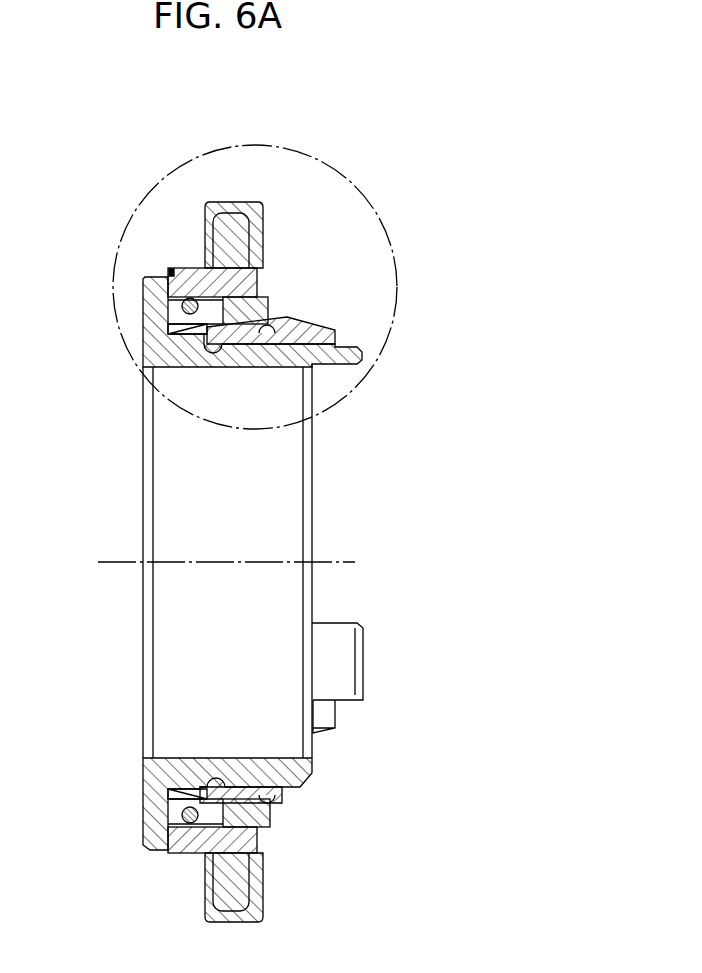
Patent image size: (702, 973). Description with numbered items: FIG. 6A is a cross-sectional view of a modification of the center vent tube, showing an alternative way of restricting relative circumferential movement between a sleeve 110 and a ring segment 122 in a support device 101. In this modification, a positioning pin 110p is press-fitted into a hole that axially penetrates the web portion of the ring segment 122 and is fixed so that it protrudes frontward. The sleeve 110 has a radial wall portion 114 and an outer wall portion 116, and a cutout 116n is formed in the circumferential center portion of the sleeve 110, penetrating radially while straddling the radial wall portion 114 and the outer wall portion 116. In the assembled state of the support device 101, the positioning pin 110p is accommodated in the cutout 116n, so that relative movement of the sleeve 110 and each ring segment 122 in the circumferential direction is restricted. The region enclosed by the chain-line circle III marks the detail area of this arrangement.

The support device 101 is at (108, 200).
The sleeve 110 is at (153, 276).
The positioning pin 110p is at (262, 272).
The radial wall portion 114 is at (143, 327).
The outer wall portion 116 is at (180, 268).
The cutout 116n is at (175, 272).
The ring segment 122 is at (228, 202).
The detail view region III is at (333, 405).